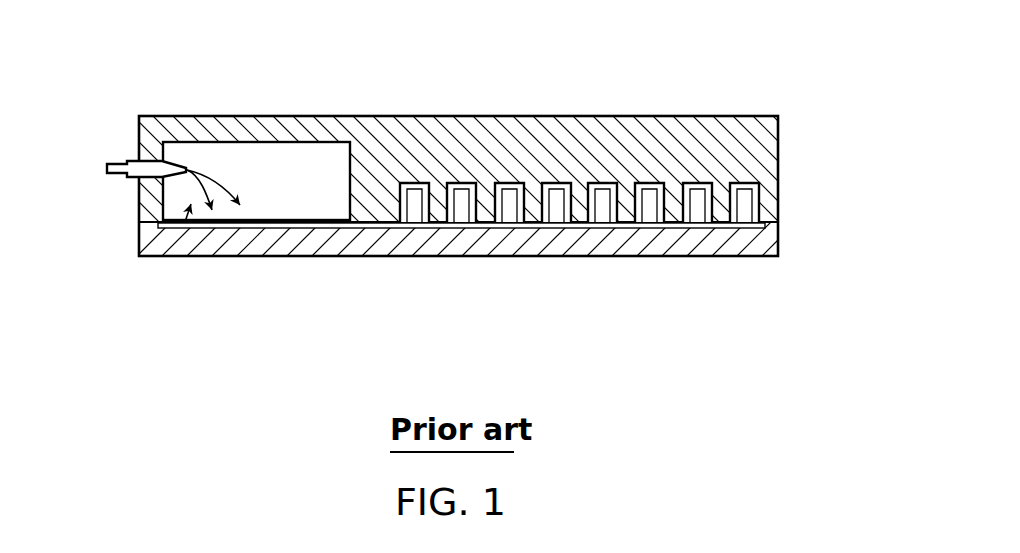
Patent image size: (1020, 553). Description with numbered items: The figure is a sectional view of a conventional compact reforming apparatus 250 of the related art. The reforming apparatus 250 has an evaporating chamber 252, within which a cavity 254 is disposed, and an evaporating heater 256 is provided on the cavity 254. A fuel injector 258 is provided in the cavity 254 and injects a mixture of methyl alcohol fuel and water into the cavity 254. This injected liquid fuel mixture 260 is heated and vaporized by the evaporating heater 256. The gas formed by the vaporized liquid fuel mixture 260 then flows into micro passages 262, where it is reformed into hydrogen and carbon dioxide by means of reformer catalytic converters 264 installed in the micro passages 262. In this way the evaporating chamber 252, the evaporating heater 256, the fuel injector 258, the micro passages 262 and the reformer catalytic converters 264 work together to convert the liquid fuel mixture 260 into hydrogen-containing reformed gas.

The reforming apparatus 250 is at (817, 103).
The evaporating chamber 252 is at (185, 222).
The cavity 254 is at (312, 195).
The evaporating heater 256 is at (265, 229).
The fuel injector 258 is at (133, 172).
The liquid fuel mixture 260 is at (222, 188).
The micro passages 262 is at (603, 210).
The reformer catalytic converters 264 is at (553, 186).